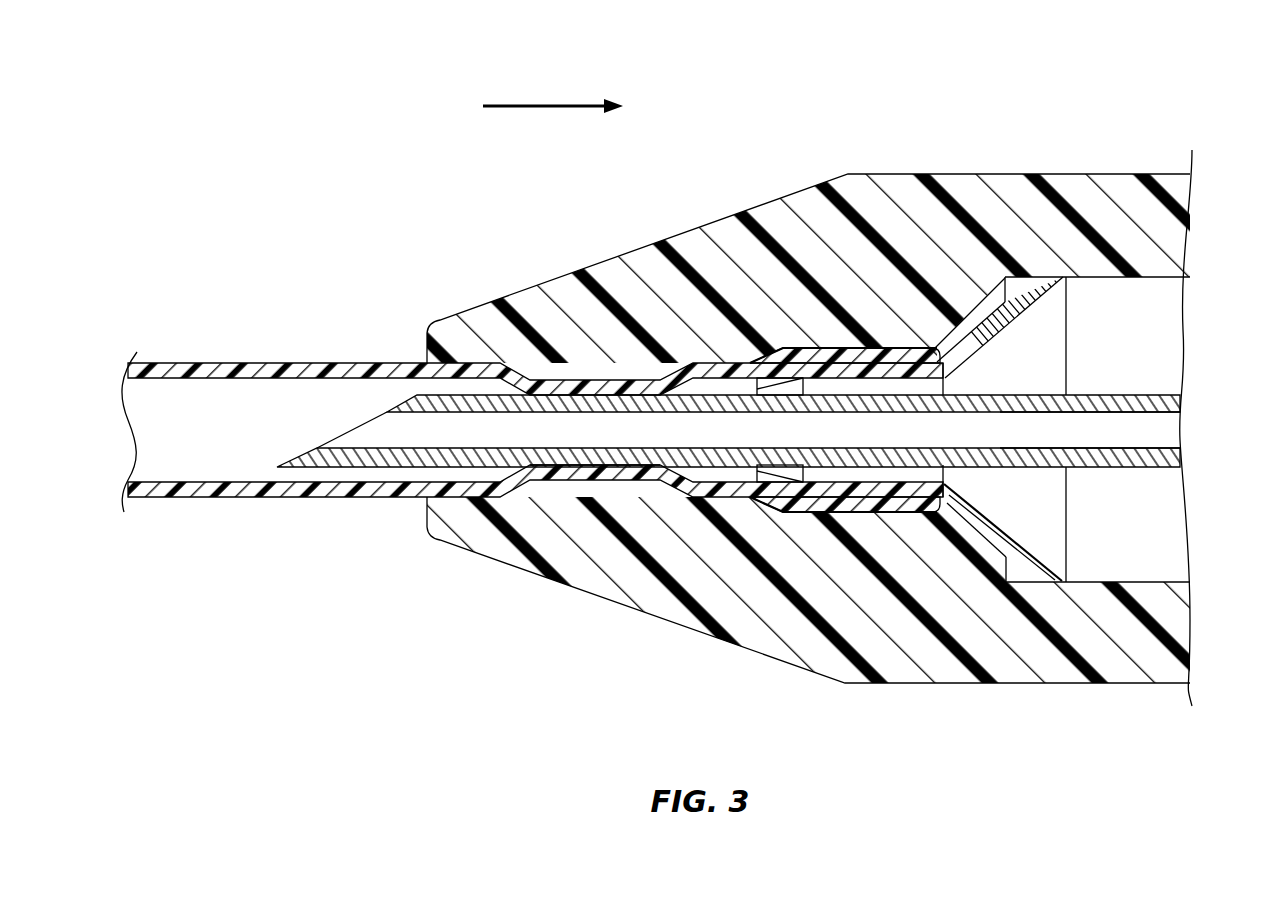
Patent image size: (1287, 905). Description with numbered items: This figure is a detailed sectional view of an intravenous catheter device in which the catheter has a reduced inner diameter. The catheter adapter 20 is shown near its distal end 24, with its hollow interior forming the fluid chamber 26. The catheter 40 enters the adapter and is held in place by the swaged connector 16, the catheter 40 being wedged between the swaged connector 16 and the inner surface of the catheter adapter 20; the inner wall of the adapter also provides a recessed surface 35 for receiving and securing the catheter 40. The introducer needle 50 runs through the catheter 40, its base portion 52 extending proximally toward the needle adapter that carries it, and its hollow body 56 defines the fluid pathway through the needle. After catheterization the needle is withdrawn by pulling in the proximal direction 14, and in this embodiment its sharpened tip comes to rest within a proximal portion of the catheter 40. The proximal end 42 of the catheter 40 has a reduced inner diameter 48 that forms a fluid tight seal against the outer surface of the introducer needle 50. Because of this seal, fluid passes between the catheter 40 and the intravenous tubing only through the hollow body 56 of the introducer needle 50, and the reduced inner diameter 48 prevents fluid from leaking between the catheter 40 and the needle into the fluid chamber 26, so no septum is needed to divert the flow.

The proximal direction 14 is at (540, 95).
The swaged connector 16 is at (982, 303).
The catheter adapter 20 is at (1008, 662).
The distal end 24 is at (528, 292).
The fluid chamber 26 is at (1092, 300).
The recessed surface 35 is at (792, 352).
The catheter 40 is at (238, 357).
The proximal end 42 is at (680, 468).
The reduced inner diameter 48 is at (583, 470).
The introducer needle 50 is at (1125, 395).
The base portion 52 is at (292, 468).
The hollow body 56 is at (1143, 432).